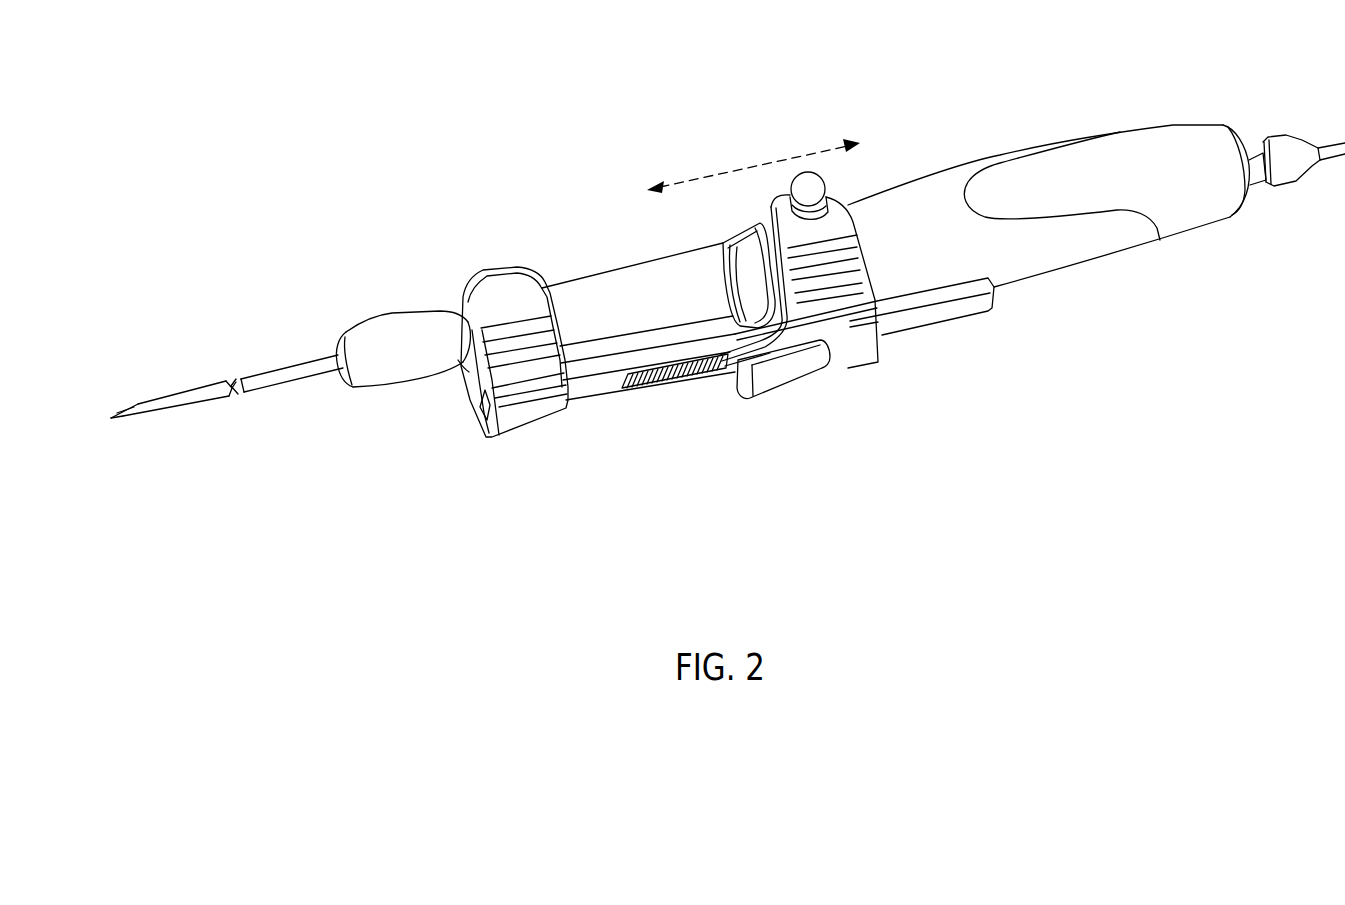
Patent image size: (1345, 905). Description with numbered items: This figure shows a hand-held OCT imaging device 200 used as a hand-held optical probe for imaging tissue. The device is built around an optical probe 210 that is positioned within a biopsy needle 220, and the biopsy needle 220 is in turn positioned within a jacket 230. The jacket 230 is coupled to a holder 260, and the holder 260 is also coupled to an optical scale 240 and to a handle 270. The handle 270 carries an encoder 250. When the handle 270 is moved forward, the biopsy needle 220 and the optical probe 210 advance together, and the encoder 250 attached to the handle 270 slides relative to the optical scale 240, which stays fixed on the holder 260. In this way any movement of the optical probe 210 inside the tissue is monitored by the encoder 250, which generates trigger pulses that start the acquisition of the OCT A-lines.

The hand-held OCT imaging device 200 is at (572, 88).
The optical probe 210 is at (136, 404).
The biopsy needle 220 is at (185, 408).
The jacket 230 is at (303, 360).
The optical scale 240 is at (653, 387).
The encoder 250 is at (787, 397).
The holder 260 is at (622, 270).
The handle 270 is at (1023, 148).